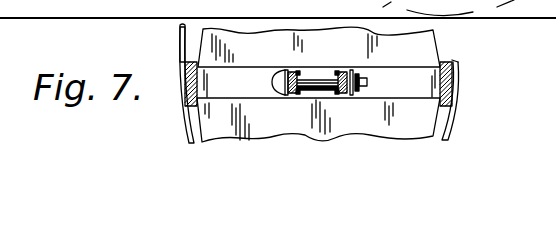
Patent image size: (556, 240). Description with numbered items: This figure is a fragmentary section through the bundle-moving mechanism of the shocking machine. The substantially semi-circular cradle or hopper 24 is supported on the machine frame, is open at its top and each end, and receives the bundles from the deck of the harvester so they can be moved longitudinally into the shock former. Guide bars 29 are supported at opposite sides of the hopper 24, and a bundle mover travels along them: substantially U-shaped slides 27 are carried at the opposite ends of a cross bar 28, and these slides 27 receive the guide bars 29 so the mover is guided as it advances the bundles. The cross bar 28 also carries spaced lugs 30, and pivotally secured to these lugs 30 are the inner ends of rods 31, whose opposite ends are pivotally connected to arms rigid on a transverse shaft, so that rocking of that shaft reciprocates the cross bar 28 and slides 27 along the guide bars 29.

The cradle or hopper 24 is at (456, 123).
The U-shaped slides 27 is at (182, 50).
The cross bar 28 is at (387, 78).
The guide bars 29 is at (186, 78).
The lugs 30 is at (355, 67).
The rods 31 is at (290, 98).